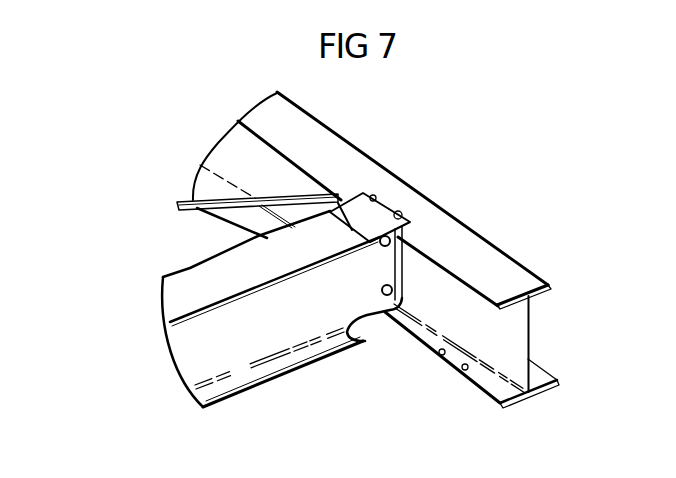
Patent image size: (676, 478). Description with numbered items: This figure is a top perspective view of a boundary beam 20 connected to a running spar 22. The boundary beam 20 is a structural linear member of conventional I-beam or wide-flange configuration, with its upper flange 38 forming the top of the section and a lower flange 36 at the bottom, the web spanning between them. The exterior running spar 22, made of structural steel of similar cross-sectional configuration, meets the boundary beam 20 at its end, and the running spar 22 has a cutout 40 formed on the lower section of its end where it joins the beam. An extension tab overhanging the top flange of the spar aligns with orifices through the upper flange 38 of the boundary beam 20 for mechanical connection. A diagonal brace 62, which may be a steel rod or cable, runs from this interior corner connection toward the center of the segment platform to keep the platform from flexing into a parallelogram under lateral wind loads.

The boundary beam 20 is at (410, 250).
The exterior running spar 22 is at (191, 280).
The bottom flange 36 is at (557, 382).
The upper flange 38 is at (523, 272).
The cutout 40 is at (368, 327).
The diagonal brace 62 is at (197, 183).